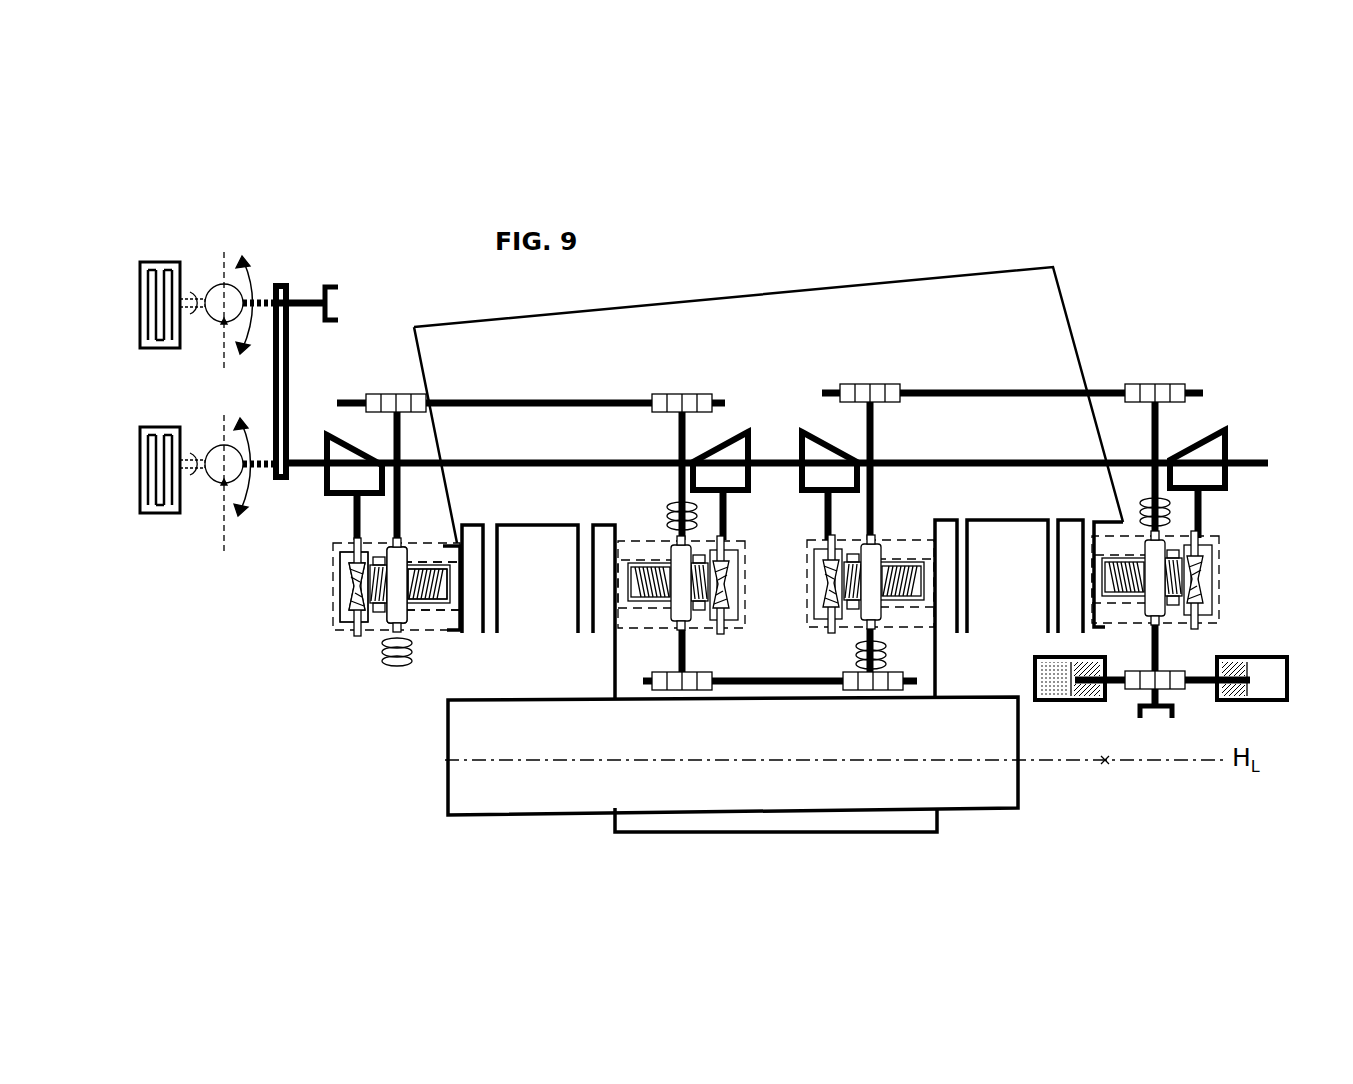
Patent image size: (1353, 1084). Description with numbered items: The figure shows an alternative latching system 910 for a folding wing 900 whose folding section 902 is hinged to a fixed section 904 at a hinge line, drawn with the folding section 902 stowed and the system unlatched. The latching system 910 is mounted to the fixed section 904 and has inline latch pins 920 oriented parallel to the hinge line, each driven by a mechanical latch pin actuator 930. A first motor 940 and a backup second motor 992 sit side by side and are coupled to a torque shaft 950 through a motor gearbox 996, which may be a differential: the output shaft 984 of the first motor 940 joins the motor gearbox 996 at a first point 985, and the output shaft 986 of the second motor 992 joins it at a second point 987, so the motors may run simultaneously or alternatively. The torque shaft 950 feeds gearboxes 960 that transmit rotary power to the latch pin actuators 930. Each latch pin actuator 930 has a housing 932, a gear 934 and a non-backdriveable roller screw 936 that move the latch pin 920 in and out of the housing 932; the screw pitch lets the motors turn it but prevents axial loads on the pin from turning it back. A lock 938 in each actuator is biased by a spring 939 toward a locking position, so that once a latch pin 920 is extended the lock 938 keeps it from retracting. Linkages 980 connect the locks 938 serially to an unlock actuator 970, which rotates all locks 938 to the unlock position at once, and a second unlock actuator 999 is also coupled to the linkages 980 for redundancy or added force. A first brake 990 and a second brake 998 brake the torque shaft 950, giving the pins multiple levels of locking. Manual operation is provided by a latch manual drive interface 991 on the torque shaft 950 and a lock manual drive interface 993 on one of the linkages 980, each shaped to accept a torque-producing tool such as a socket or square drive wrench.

The folding wing 900 is at (1218, 253).
The folding section 902 is at (1120, 805).
The fixed section 904 is at (1053, 267).
The latching system 910 is at (228, 395).
The latch pin 920 is at (435, 610).
The latch pin actuator 930 is at (782, 617).
The housing 932 is at (338, 595).
The gear 934 is at (338, 575).
The roller screw 936 is at (433, 605).
The lock 938 is at (357, 608).
The spring 939 is at (387, 660).
The first motor 940 is at (212, 450).
The torque shaft 950 is at (573, 462).
The gearbox 960 is at (1228, 437).
The unlock actuator 970 is at (1265, 700).
The linkage 980 is at (1200, 680).
The output shaft 984 is at (252, 292).
The first point 985 is at (293, 288).
The output shaft 986 is at (240, 428).
The second point 987 is at (272, 460).
The first brake 990 is at (150, 515).
The latch manual drive interface 991 is at (330, 288).
The second motor 992 is at (212, 288).
The lock manual drive interface 993 is at (1172, 712).
The motor gearbox 996 is at (293, 370).
The second brake 998 is at (135, 262).
The second unlock actuator 999 is at (1042, 658).